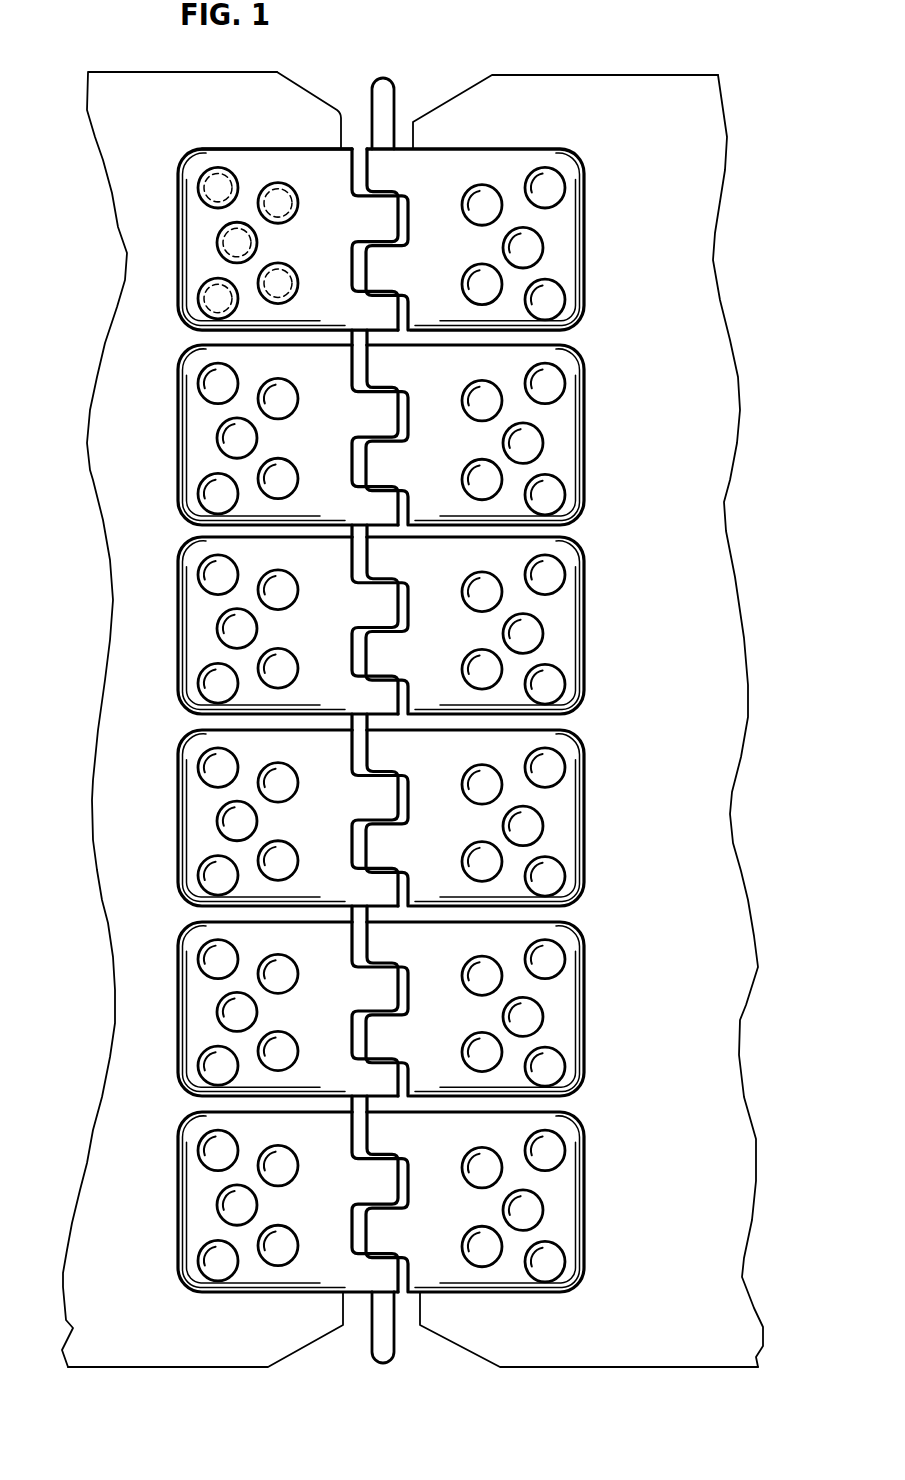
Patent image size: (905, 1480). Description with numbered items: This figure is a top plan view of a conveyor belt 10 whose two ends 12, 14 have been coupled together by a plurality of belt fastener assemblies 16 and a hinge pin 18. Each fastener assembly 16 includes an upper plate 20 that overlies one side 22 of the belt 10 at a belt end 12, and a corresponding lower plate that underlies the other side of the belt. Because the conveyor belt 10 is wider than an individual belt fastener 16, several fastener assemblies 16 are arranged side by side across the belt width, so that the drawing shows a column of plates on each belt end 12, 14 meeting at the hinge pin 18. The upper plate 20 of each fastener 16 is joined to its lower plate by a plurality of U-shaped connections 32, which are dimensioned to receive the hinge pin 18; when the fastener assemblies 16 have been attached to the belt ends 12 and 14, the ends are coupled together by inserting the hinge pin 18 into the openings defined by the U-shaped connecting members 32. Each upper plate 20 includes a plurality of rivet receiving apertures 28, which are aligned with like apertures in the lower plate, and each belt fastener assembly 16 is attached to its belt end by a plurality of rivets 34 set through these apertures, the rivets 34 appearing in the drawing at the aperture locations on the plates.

The conveyor belt 10 is at (705, 58).
The belt end 12 is at (342, 133).
The belt end 14 is at (413, 122).
The fastener assembly 16 is at (177, 188).
The hinge pin 18 is at (396, 100).
The upper plate 20 is at (263, 163).
The side of the belt 22 is at (200, 129).
The rivet receiving apertures 28 is at (213, 207).
The U-shaped connections 32 is at (387, 217).
The rivets 34 is at (217, 245).